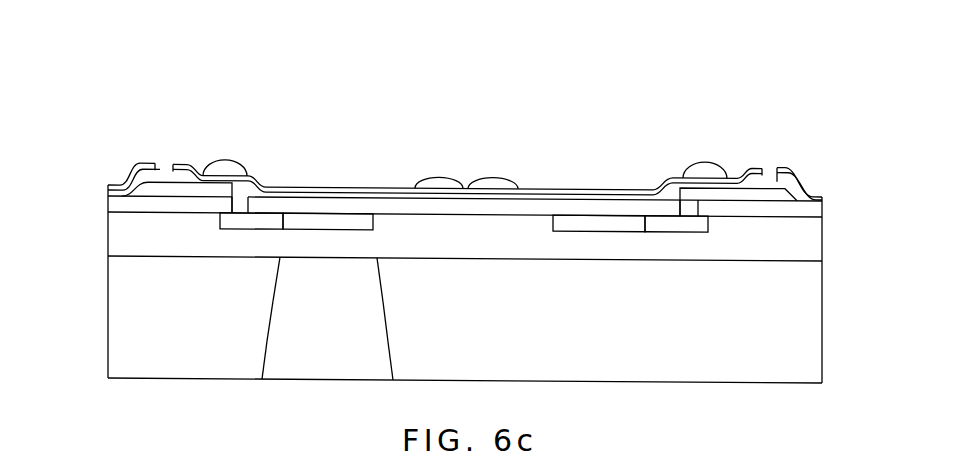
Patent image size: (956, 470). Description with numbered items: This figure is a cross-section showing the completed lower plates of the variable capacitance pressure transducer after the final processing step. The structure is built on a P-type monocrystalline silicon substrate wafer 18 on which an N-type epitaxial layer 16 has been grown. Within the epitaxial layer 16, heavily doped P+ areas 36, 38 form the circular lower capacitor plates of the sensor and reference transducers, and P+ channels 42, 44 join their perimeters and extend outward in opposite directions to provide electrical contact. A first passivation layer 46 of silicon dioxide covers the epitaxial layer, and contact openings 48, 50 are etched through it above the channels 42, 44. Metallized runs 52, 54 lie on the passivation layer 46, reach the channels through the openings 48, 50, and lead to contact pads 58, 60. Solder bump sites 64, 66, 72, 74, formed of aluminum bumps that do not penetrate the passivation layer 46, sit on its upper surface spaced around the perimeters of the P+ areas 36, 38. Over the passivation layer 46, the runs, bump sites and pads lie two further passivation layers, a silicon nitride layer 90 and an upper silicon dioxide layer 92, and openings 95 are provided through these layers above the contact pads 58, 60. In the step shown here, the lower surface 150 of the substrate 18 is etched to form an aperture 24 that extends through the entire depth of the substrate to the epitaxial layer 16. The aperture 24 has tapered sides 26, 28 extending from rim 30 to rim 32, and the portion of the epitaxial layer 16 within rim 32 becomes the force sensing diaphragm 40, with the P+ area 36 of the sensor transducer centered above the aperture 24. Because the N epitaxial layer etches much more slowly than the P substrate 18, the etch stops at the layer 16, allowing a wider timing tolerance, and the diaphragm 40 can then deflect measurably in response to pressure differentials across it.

The N-type epitaxial layer 16 is at (498, 249).
The silicon substrate wafer 18 is at (572, 338).
The aperture 24 is at (321, 376).
The tapered side 26 is at (386, 334).
The tapered side 28 is at (270, 335).
The rim 30 is at (392, 376).
The rim 32 is at (377, 258).
The P+ area 36 is at (355, 228).
The P+ area 38 is at (557, 228).
The force sensing diaphragm 40 is at (310, 259).
The P+ channel 42 is at (228, 228).
The P+ channel 44 is at (695, 228).
The first passivation layer 46 is at (117, 202).
The contact opening 48 is at (236, 198).
The contact opening 50 is at (692, 203).
The metallized run 52 is at (213, 187).
The metallized run 54 is at (714, 187).
The contact pad 58 is at (158, 152).
The contact pad 60 is at (776, 155).
The solder bump site 64 is at (231, 157).
The solder bump site 66 is at (454, 150).
The solder bump site 72 is at (492, 152).
The solder bump site 74 is at (698, 153).
The silicon nitride layer 90 is at (822, 196).
The upper silicon dioxide layer 92 is at (822, 192).
The opening 95 is at (172, 166).
The lower surface 150 is at (207, 378).